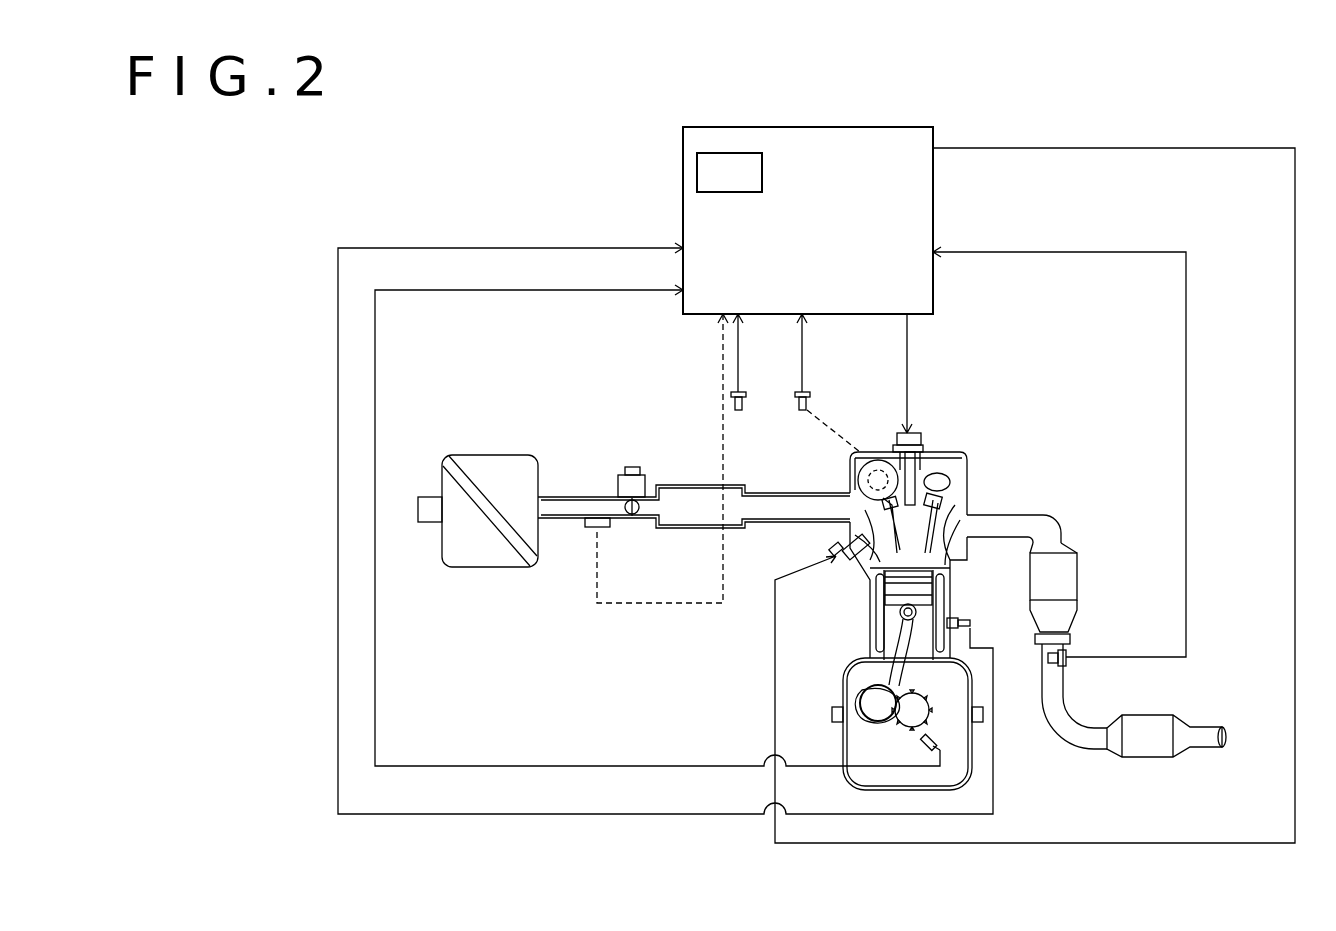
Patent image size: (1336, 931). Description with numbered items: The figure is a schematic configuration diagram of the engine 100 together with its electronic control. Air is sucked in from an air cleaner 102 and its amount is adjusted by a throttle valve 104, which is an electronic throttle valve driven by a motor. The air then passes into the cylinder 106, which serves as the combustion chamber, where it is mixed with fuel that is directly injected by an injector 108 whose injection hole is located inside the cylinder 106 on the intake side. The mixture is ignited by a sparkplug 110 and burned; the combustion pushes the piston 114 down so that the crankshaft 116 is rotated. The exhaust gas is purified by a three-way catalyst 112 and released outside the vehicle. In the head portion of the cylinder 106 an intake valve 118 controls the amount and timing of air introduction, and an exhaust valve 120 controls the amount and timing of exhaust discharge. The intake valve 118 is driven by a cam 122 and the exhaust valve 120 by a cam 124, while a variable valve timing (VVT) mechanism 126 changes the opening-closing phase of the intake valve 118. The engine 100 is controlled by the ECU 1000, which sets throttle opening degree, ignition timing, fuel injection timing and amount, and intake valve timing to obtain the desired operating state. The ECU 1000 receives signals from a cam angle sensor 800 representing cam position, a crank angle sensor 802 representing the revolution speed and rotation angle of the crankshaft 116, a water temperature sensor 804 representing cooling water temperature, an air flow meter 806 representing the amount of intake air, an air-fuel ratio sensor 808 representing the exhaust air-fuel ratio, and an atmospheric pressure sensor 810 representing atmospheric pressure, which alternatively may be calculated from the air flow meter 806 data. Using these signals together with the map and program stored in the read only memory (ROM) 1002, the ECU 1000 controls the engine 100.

The engine 100 is at (1041, 456).
The air cleaner 102 is at (490, 456).
The throttle valve 104 is at (645, 498).
The cylinder 106 is at (883, 590).
The injector 108 is at (840, 547).
The sparkplug 110 is at (923, 436).
The three-way catalyst 112 is at (1078, 575).
The piston 114 is at (872, 645).
The crankshaft 116 is at (942, 760).
The intake valve 118 is at (846, 493).
The exhaust valve 120 is at (975, 500).
The cam 122 is at (868, 452).
The cam 124 is at (962, 472).
The variable valve timing (VVT) mechanism 126 is at (876, 460).
The cam angle sensor 800 is at (812, 392).
The crank angle sensor 802 is at (947, 740).
The water temperature sensor 804 is at (962, 625).
The air flow meter 806 is at (595, 530).
The air-fuel ratio sensor 808 is at (1068, 660).
The atmospheric pressure sensor 810 is at (748, 392).
The ECU 1000 is at (842, 127).
The read only memory (ROM) 1002 is at (730, 153).